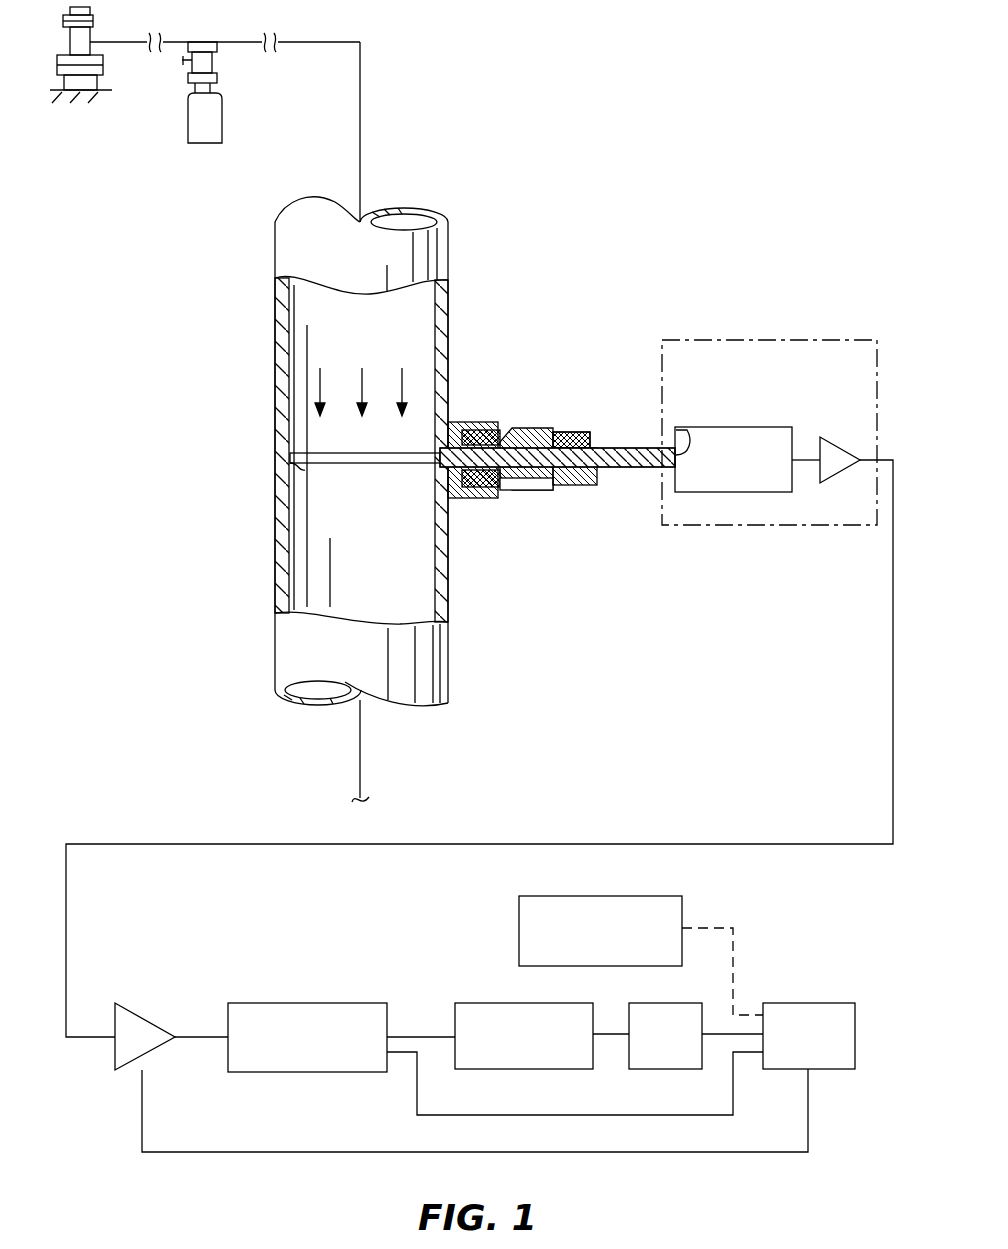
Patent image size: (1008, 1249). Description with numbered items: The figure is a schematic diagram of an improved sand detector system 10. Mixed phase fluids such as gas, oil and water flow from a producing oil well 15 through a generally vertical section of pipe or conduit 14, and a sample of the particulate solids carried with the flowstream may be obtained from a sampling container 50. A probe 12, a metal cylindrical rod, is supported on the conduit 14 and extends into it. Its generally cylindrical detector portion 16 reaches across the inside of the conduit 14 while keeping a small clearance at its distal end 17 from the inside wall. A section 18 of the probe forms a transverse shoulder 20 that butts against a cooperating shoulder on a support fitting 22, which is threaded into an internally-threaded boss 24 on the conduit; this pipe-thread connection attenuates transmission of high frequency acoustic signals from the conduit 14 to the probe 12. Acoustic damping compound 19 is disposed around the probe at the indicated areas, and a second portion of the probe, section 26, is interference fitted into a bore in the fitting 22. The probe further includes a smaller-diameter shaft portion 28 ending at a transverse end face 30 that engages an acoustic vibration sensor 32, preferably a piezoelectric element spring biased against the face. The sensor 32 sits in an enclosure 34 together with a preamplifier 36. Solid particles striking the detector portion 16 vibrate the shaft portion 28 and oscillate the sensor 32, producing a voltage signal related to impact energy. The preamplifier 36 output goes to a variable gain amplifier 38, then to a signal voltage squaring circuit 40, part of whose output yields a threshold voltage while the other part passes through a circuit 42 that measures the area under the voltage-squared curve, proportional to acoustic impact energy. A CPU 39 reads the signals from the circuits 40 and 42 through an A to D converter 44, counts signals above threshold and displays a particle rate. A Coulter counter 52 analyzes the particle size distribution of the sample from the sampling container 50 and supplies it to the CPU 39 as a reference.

The sand detector system 10 is at (628, 322).
The probe 12 is at (557, 463).
The conduit 14 is at (370, 499).
The producing oil well 15 is at (93, 20).
The detector portion 16 is at (290, 462).
The distal end 17 is at (277, 450).
The probe section 18 is at (498, 430).
The acoustic damping compound 19 is at (478, 430).
The transverse shoulder 20 is at (525, 490).
The support fitting 22 is at (530, 428).
The internally-threaded boss 24 is at (472, 498).
The probe section 26 is at (540, 490).
The shaft portion 28 is at (630, 448).
The transverse end face 30 is at (684, 432).
The acoustic vibration sensor 32 is at (730, 427).
The enclosure 34 is at (780, 340).
The preamplifier 36 is at (840, 440).
The variable gain amplifier 38 is at (148, 1014).
The CPU 39 is at (810, 1003).
The signal voltage squaring circuit 40 is at (292, 1003).
The energy circuit 42 is at (485, 1003).
The A to D converter 44 is at (655, 1069).
The sampling container 50 is at (188, 120).
The Coulter counter 52 is at (682, 910).